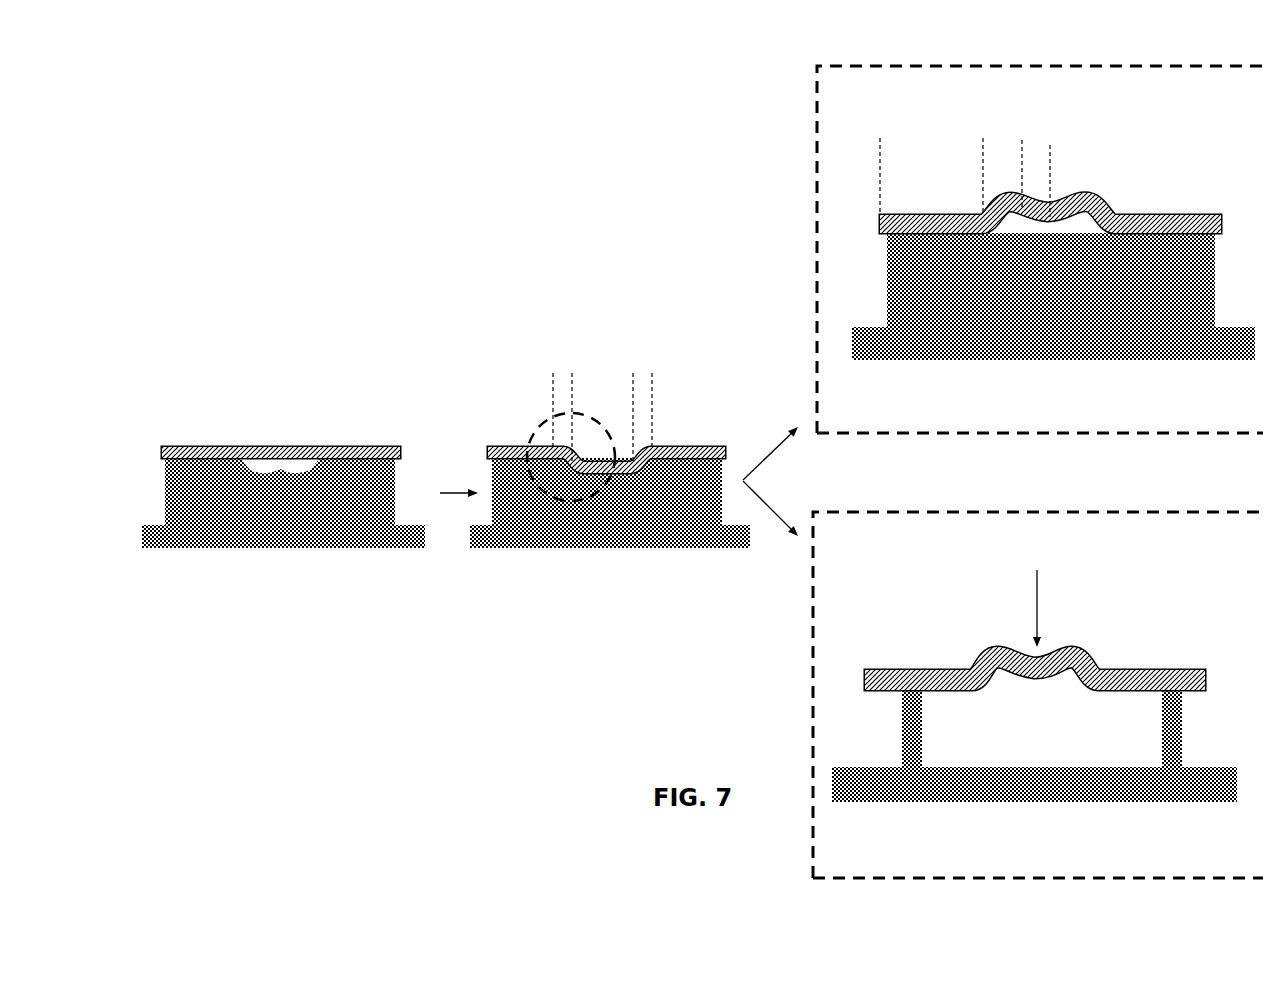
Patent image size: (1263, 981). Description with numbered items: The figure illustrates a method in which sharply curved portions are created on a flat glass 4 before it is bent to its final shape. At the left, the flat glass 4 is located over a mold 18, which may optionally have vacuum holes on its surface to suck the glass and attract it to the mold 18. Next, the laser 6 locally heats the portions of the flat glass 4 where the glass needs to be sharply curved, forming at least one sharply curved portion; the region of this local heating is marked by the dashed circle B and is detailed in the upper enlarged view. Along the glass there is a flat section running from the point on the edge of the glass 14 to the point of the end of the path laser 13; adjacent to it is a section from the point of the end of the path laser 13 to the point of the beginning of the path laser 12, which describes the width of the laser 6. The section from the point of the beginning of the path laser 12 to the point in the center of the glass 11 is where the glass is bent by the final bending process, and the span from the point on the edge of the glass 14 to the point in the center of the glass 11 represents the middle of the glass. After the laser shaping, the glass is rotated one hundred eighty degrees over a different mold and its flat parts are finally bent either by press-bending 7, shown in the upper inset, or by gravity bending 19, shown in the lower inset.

The flat glass 4 is at (281, 387).
The laser 6 is at (602, 396).
The press-bending 7 is at (1051, 174).
The point in the center of the glass 11 is at (1051, 162).
The point of the beginning of the path laser 12 is at (1018, 159).
The point of the end of the path laser 13 is at (983, 162).
The point on the edge of the glass 14 is at (891, 162).
The mold 18 is at (698, 438).
The gravity bending 19 is at (1034, 733).
The detail region B is at (542, 439).